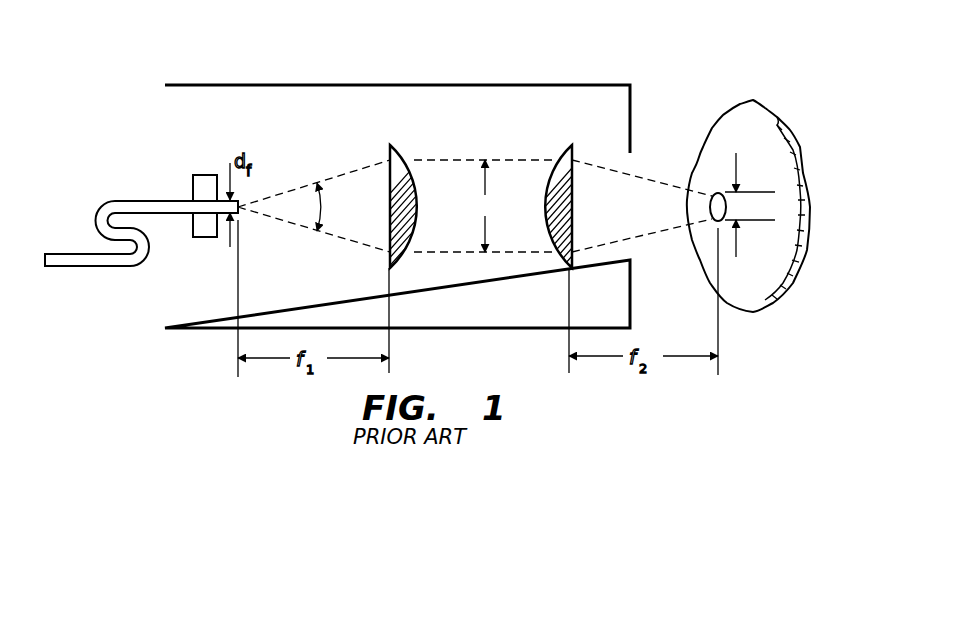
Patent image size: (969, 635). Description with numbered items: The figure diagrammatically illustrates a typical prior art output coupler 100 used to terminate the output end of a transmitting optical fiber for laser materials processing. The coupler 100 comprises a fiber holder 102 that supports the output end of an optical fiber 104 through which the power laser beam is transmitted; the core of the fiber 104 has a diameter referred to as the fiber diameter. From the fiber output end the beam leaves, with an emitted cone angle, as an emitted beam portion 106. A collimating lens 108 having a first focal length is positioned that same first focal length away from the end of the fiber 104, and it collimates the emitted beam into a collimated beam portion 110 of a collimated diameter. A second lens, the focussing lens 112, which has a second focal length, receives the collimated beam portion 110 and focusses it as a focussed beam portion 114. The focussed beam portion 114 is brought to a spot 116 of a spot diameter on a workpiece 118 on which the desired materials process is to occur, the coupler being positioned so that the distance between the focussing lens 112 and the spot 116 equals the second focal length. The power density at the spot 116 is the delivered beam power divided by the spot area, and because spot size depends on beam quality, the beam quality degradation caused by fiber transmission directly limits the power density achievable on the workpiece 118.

The output coupler 100 is at (645, 72).
The fiber holder 102 is at (205, 175).
The optical fiber 104 is at (120, 200).
The emitted beam portion 106 is at (338, 172).
The collimating lens 108 is at (400, 143).
The collimated beam portion 110 is at (458, 160).
The focussing lens 112 is at (568, 145).
The focussed beam portion 114 is at (658, 180).
The spot 116 is at (727, 211).
The workpiece 118 is at (765, 103).